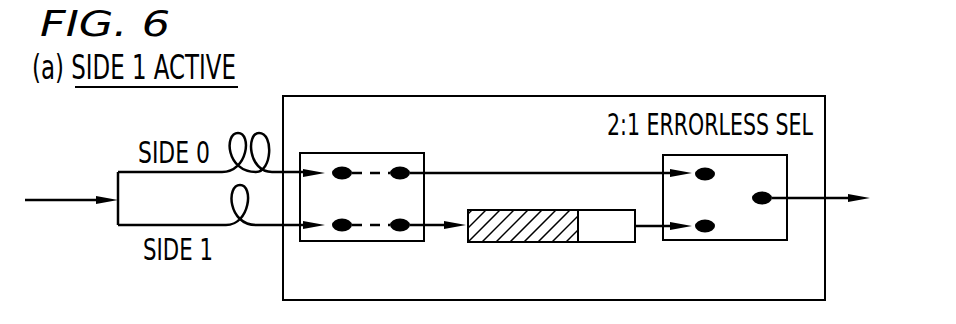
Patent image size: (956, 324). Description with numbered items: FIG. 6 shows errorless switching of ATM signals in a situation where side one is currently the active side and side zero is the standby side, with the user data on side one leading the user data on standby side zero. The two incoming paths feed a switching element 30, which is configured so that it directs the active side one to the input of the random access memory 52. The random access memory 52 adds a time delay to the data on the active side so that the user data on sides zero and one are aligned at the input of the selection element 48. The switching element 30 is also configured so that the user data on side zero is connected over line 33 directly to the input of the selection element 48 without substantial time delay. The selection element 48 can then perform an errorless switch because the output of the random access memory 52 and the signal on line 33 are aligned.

The switching element 30 is at (413, 153).
The line 33 is at (518, 172).
The random access memory 52 is at (490, 243).
The selection element 48 is at (680, 241).